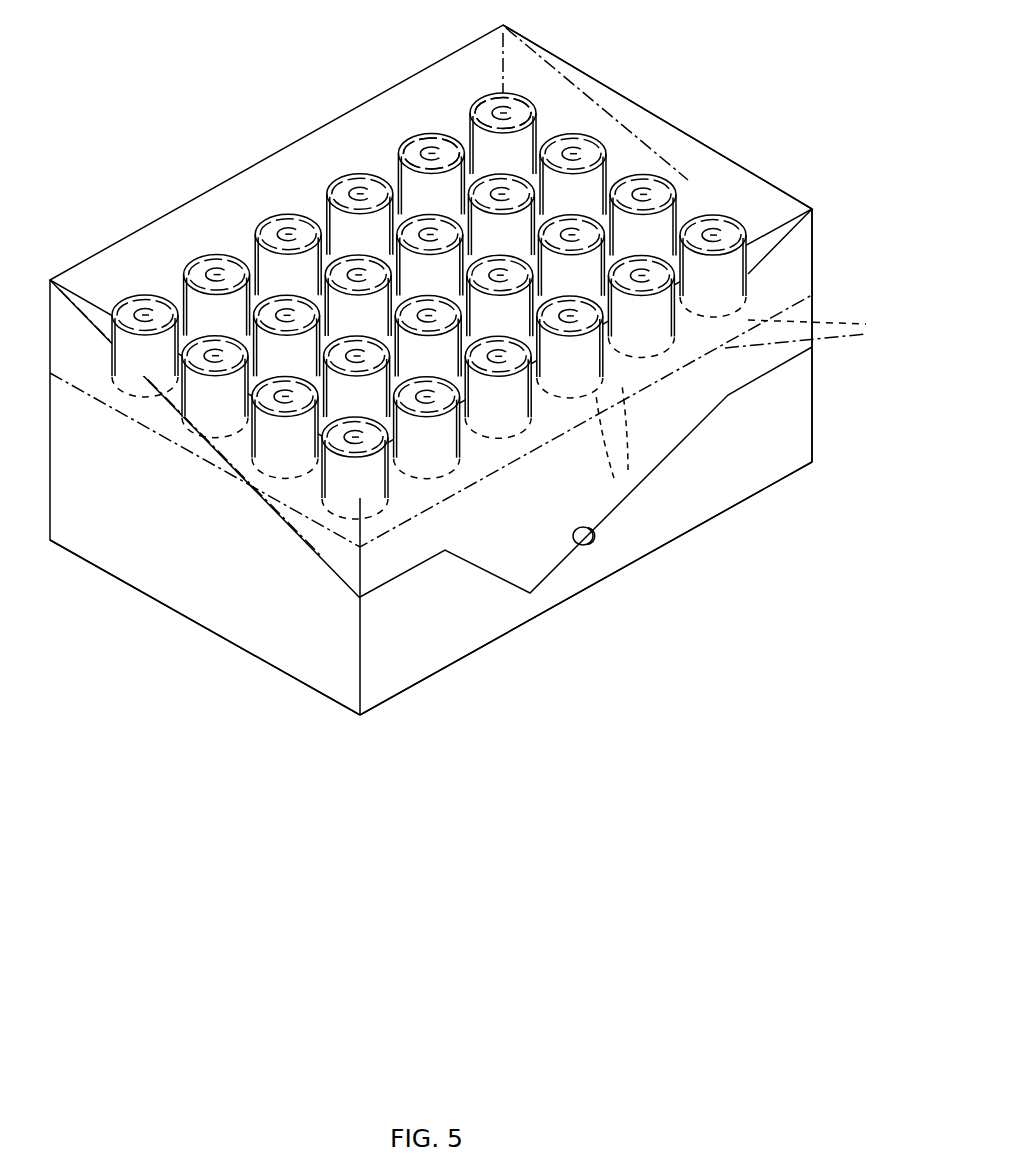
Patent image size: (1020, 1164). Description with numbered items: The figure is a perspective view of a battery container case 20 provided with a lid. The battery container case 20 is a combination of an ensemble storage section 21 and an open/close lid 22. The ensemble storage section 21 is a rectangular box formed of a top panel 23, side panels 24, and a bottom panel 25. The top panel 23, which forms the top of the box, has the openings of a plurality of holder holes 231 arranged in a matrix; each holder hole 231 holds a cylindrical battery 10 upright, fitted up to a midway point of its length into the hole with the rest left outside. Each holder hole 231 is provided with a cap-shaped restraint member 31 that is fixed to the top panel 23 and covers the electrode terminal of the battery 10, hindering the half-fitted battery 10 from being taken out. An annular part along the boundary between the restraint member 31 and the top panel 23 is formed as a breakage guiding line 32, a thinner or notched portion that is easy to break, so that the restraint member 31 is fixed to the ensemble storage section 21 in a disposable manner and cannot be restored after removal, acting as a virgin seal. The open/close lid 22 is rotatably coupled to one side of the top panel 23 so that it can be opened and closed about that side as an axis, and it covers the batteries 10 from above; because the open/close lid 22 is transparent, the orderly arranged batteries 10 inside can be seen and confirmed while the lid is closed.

The cylindrical battery 10 is at (404, 138).
The battery container case 20 is at (772, 604).
The ensemble storage section 21 is at (218, 551).
The open/close lid 22 is at (652, 112).
The top panel 23 is at (772, 280).
The side panel 24 is at (278, 598).
The bottom panel 25 is at (447, 647).
The cap-shaped restraint member 31 is at (482, 100).
The breakage guiding line 32 is at (819, 331).
The holder hole 231 is at (605, 465).